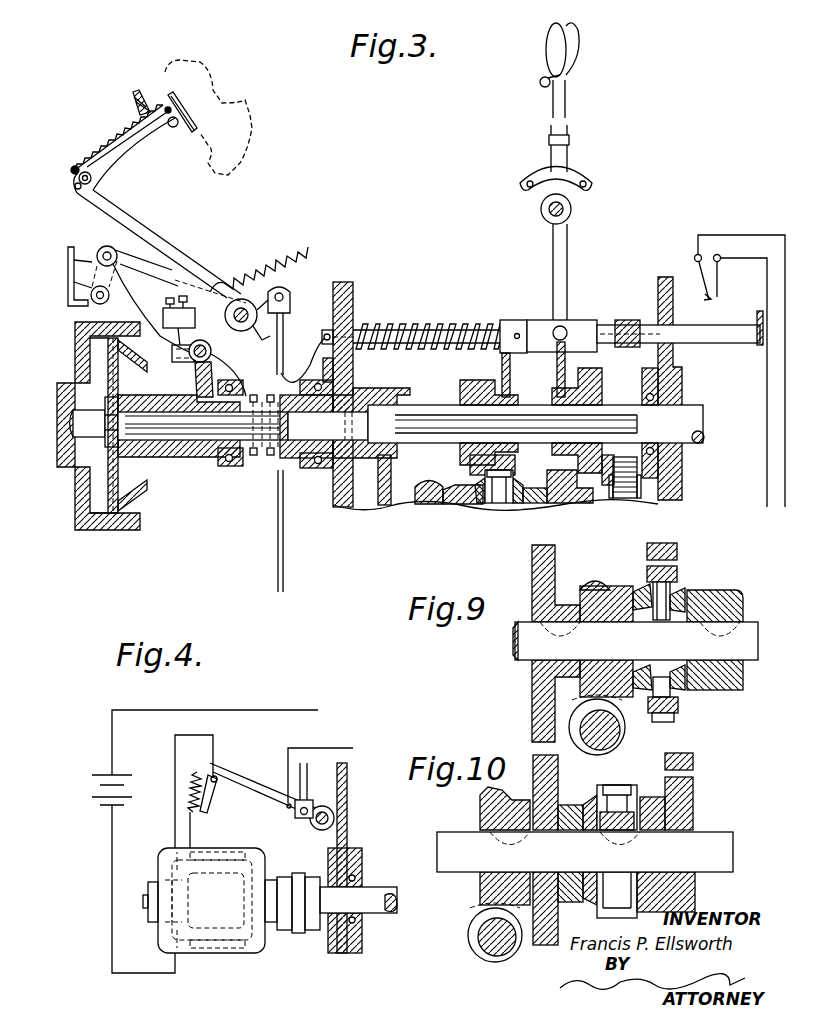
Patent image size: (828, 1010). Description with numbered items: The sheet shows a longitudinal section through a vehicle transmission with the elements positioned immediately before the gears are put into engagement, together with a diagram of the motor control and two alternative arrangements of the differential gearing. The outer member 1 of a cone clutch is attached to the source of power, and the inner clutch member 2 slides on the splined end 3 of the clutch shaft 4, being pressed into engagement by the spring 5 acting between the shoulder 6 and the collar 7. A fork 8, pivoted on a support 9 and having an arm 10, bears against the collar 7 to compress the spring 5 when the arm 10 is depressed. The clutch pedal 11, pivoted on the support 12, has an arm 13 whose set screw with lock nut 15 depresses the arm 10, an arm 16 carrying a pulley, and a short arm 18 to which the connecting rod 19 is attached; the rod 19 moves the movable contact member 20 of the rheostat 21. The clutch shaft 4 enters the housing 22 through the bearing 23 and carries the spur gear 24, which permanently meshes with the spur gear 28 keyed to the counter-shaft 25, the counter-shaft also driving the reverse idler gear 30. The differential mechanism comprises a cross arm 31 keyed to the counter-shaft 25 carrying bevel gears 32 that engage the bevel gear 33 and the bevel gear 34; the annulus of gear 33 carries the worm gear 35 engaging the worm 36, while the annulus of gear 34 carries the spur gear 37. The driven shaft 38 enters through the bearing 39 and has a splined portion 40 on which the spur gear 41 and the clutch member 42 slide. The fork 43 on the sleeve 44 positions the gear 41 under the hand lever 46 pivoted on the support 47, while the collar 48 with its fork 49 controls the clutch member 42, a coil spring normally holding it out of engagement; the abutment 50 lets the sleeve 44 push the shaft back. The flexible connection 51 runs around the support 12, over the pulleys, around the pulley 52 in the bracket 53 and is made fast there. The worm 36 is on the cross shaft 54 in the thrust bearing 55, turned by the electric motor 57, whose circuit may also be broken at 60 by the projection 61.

In FIG. 3, the outer member of cone clutch 1 is at (116, 530).
In FIG. 3, the inner clutch member 2 is at (140, 513).
In FIG. 3, the splined end 3 is at (160, 442).
In FIG. 3, the clutch shaft 4 is at (298, 450).
In FIG. 3, the spring 5 is at (244, 450).
In FIG. 3, the shoulder 6 is at (272, 447).
In FIG. 3, the collar 7 is at (243, 392).
In FIG. 3, the fork 8 is at (197, 378).
In FIG. 3, the support 9 is at (207, 351).
In FIG. 3, the arm 10 is at (180, 363).
In FIG. 3, the clutch pedal 11 is at (104, 211).
In FIG. 3, the support 12 is at (242, 324).
In FIG. 3, the arm 13 is at (195, 312).
In FIG. 3, the lock nut 15 is at (166, 309).
In FIG. 3, the arm 16 is at (128, 258).
In FIG. 3, the short arm 18 is at (274, 293).
In FIG. 3, the connecting rod 19 is at (285, 330).
In FIG. 4, the connecting rod 19 is at (306, 785).
In FIG. 4, the movable contact member 20 is at (248, 781).
In FIG. 4, the rheostat 21 is at (208, 772).
In FIG. 3, the housing 22 is at (333, 500).
In FIG. 3, the bearing 23 is at (330, 386).
In FIG. 3, the spur gear 24 is at (380, 398).
In FIG. 9, the counter-shaft 25 is at (520, 640).
In FIG. 10, the counter-shaft 25 is at (447, 840).
In FIG. 3, the spur gear 28 is at (383, 506).
In FIG. 9, the spur gear 28 is at (532, 697).
In FIG. 10, the spur gear 28 is at (542, 770).
In FIG. 3, the reverse idler gear 30 is at (630, 500).
In FIG. 3, the cross arm 31 is at (494, 505).
In FIG. 3, the bevel gears 32 is at (500, 505).
In FIG. 9, the bevel gears 32 is at (678, 592).
In FIG. 10, the bevel gears 32 is at (614, 796).
In FIG. 3, the bevel gear 33 is at (460, 510).
In FIG. 9, the bevel gear 33 is at (621, 588).
In FIG. 10, the bevel gear 33 is at (587, 903).
In FIG. 3, the bevel gear 34 is at (538, 505).
In FIG. 9, the bevel gear 34 is at (720, 590).
In FIG. 10, the bevel gear 34 is at (695, 890).
In FIG. 3, the worm gear 35 is at (428, 505).
In FIG. 9, the worm gear 35 is at (594, 584).
In FIG. 10, the worm gear 35 is at (478, 800).
In FIG. 9, the worm 36 is at (620, 738).
In FIG. 10, the worm 36 is at (485, 948).
In FIG. 3, the spur gear 37 is at (570, 503).
In FIG. 9, the spur gear 37 is at (678, 726).
In FIG. 10, the spur gear 37 is at (693, 792).
In FIG. 3, the driven shaft 38 is at (705, 432).
In FIG. 3, the bearing 39 is at (662, 406).
In FIG. 3, the splined portion 40 is at (420, 416).
In FIG. 3, the spur gear 41 is at (602, 385).
In FIG. 9, the spur gear 41 is at (677, 548).
In FIG. 3, the clutch member 42 is at (465, 382).
In FIG. 3, the fork 43 is at (557, 362).
In FIG. 3, the sleeve 44 is at (576, 322).
In FIG. 3, the hand lever 46 is at (570, 258).
In FIG. 3, the support 47 is at (541, 210).
In FIG. 3, the collar 48 is at (505, 322).
In FIG. 3, the fork 49 is at (510, 378).
In FIG. 3, the abutment 50 is at (644, 322).
In FIG. 3, the flexible connection 51 is at (307, 356).
In FIG. 3, the pulley 52 is at (101, 292).
In FIG. 3, the bracket 53 is at (68, 292).
In FIG. 4, the cross shaft 54 is at (371, 885).
In FIG. 4, the thrust bearing 55 is at (362, 916).
In FIG. 4, the electric motor 57 is at (231, 900).
In FIG. 3, the circuit break point 60 is at (737, 371).
In FIG. 3, the projection 61 is at (757, 320).